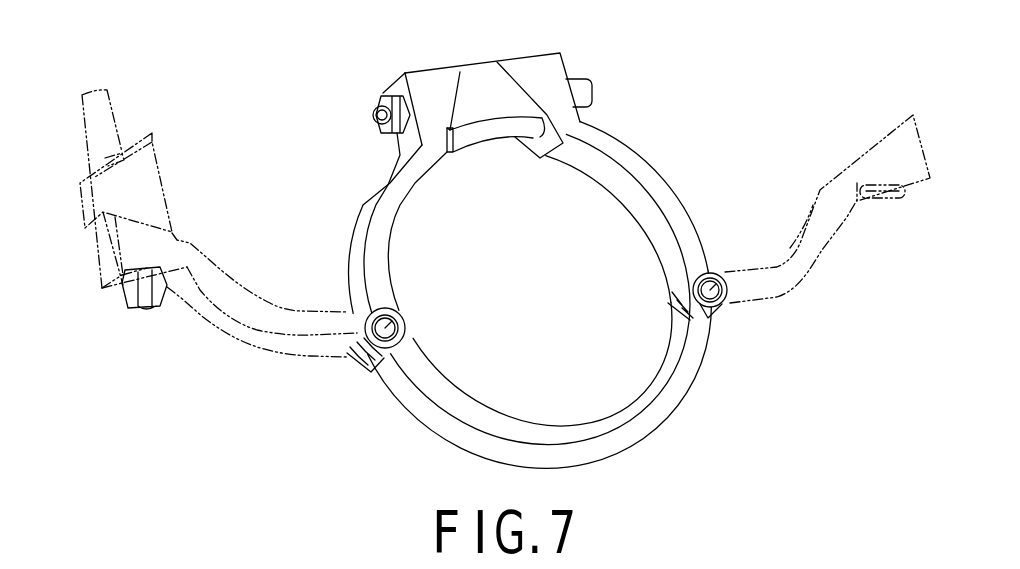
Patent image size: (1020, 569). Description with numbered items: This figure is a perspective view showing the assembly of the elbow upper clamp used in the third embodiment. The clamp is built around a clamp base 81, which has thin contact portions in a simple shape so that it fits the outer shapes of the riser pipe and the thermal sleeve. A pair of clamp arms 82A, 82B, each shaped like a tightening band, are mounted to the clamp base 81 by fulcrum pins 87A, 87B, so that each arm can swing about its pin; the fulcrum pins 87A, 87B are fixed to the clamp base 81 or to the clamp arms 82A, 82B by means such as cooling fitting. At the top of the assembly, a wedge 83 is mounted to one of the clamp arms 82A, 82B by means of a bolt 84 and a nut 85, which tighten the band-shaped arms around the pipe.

The clamp base 81 is at (676, 388).
The clamp arm 82A is at (658, 176).
The clamp arm 82B is at (360, 232).
The wedge 83 is at (486, 73).
The bolt 84 is at (583, 78).
The nut 85 is at (385, 93).
The fulcrum pin 87A is at (723, 305).
The fulcrum pin 87B is at (363, 365).